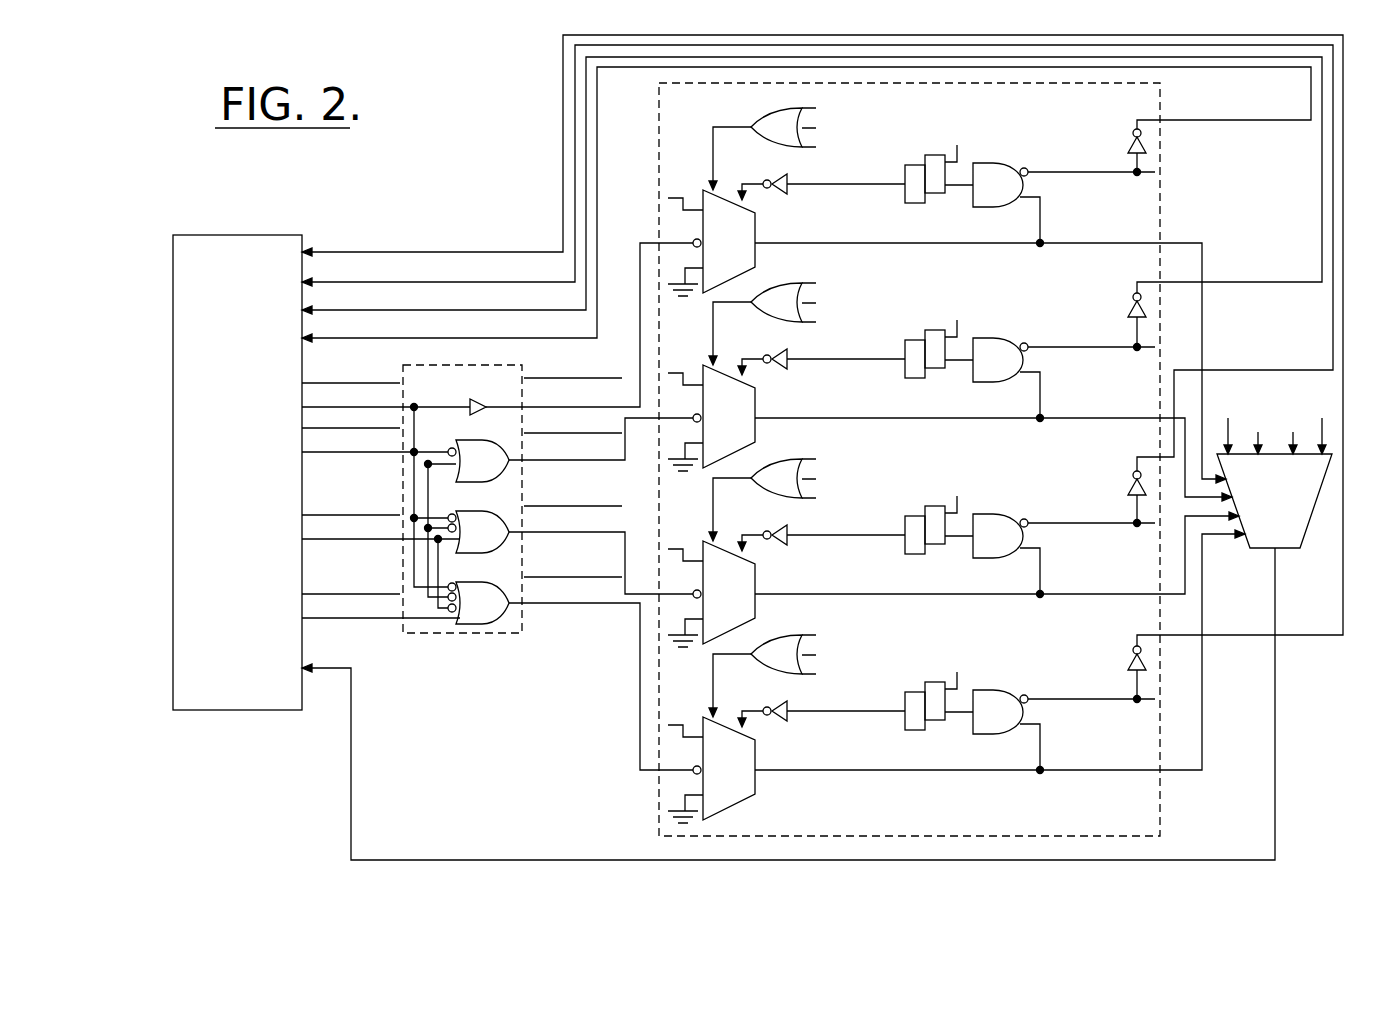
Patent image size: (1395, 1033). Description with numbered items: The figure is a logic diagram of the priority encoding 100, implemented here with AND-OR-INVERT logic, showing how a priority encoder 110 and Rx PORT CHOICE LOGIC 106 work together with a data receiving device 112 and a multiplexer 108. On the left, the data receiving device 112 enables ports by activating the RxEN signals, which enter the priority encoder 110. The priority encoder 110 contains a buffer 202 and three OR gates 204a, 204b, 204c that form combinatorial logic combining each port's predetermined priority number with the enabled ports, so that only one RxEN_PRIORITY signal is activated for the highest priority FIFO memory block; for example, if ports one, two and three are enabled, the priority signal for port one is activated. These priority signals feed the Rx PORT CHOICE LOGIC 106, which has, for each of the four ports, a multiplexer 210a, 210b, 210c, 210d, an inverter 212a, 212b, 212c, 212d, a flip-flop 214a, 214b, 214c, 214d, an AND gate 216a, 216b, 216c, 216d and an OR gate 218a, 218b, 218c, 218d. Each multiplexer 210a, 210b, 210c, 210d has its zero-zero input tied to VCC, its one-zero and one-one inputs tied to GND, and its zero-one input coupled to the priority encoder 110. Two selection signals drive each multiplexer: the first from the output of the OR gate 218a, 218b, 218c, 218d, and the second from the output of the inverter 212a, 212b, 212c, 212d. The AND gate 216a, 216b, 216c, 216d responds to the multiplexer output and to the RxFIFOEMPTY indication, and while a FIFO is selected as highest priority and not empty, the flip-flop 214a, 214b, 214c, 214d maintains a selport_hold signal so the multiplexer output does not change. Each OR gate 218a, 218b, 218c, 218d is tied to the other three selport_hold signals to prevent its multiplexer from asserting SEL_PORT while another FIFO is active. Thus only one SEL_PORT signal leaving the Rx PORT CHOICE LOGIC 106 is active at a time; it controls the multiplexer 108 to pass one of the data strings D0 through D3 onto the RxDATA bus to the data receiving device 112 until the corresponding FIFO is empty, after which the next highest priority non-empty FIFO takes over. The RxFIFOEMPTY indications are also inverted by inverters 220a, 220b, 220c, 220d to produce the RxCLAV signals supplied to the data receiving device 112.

The priority encoding 100 is at (452, 198).
The Rx PORT CHOICE LOGIC 106 is at (1152, 110).
The multiplexer 108 is at (1259, 504).
The priority encoder 110 is at (442, 392).
The data receiving device 112 is at (222, 561).
The buffer 202 is at (493, 383).
The OR gate 204a is at (470, 443).
The OR gate 204b is at (470, 513).
The OR gate 204c is at (470, 583).
The multiplexer 210a is at (757, 228).
The multiplexer 210b is at (914, 418).
The multiplexer 210c is at (914, 594).
The multiplexer 210d is at (914, 770).
The inverter 212a is at (792, 190).
The inverter 212b is at (821, 363).
The inverter 212c is at (821, 539).
The inverter 212d is at (821, 715).
The flip-flop 214a is at (911, 206).
The flip-flop 214b is at (915, 358).
The flip-flop 214c is at (915, 534).
The flip-flop 214d is at (915, 710).
The AND gate 216a is at (990, 209).
The AND gate 216b is at (1045, 373).
The AND gate 216c is at (1045, 549).
The AND gate 216d is at (1045, 725).
The OR gate 218a is at (789, 152).
The OR gate 218b is at (806, 319).
The OR gate 218c is at (806, 495).
The OR gate 218d is at (806, 671).
The inverter 220a is at (1130, 135).
The inverter 220b is at (1130, 298).
The inverter 220c is at (1130, 476).
The inverter 220d is at (1130, 651).